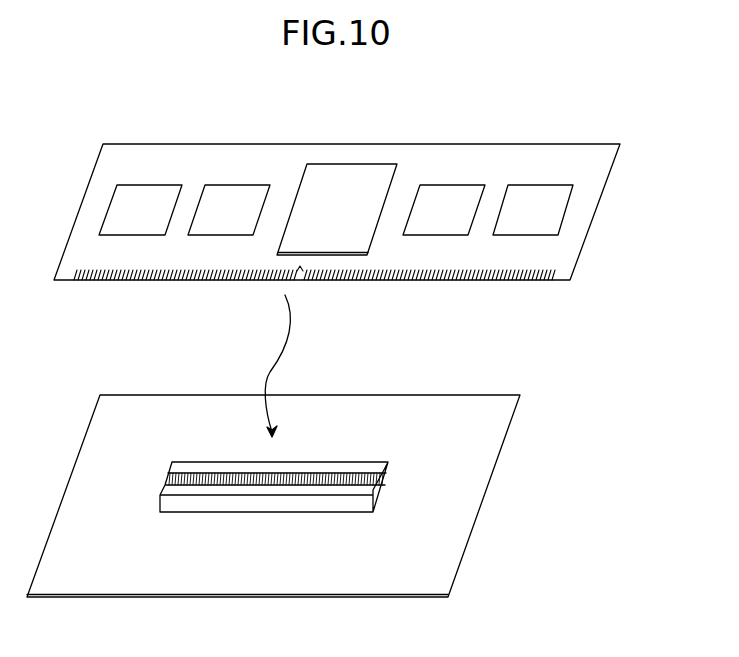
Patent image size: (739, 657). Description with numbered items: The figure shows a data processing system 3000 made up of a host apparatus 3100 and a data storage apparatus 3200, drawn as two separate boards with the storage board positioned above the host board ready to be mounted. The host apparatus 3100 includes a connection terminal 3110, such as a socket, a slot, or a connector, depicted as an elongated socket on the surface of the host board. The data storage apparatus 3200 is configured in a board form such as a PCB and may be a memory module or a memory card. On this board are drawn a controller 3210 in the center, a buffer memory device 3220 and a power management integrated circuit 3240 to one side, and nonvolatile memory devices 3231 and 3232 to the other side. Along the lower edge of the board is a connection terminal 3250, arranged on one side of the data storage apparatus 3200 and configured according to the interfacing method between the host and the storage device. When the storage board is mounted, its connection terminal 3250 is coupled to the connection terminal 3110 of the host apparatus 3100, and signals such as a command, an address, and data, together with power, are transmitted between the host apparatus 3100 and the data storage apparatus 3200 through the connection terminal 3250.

The data processing system 3000 is at (198, 112).
The data storage apparatus 3200 is at (337, 231).
The power management integrated circuit 3240 is at (140, 210).
The buffer memory device 3220 is at (229, 210).
The controller 3210 is at (337, 209).
The nonvolatile memory device 3231 is at (444, 210).
The nonvolatile memory device 3232 is at (533, 210).
The connection terminal 3250 is at (88, 280).
The host apparatus 3100 is at (273, 496).
The connection terminal 3110 is at (405, 457).